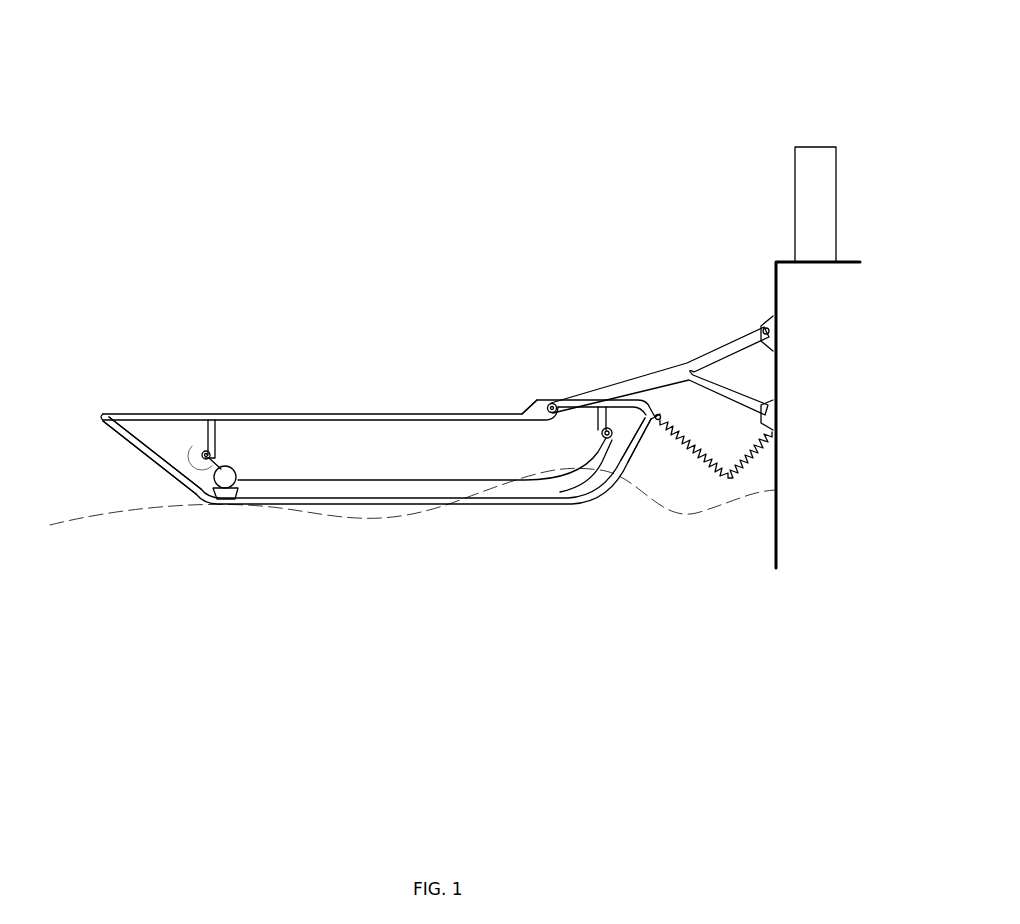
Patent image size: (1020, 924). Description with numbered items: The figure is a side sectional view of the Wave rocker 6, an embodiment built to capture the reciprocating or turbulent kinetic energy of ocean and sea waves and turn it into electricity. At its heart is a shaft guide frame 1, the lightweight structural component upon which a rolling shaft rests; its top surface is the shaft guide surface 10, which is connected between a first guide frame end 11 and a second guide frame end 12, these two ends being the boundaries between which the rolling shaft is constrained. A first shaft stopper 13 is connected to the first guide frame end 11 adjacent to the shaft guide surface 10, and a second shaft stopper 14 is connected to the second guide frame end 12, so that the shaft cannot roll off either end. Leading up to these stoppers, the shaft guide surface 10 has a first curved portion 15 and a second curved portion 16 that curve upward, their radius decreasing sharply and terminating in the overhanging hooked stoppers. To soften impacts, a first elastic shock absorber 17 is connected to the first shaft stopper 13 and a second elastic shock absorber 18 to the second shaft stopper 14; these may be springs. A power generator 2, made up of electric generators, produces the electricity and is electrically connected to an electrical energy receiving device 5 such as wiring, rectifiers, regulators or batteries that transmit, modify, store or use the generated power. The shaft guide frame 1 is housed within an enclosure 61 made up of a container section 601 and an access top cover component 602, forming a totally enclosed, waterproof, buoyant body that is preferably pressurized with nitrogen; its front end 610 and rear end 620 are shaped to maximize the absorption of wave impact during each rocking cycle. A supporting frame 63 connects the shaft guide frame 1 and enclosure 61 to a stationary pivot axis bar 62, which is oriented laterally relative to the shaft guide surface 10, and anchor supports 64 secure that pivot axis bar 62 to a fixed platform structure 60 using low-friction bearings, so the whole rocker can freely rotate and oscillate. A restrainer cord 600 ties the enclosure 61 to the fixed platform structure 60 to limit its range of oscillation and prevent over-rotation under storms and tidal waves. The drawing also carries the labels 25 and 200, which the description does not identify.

The shaft guide frame 1 is at (302, 490).
The power generator 2 is at (229, 466).
The electrical energy receiving device 5 is at (804, 163).
The Wave rocker 6 is at (433, 280).
The shaft guide surface 10 is at (377, 478).
The first guide frame end 11 is at (191, 436).
The second guide frame end 12 is at (621, 455).
The first shaft stopper 13 is at (211, 445).
The second shaft stopper 14 is at (605, 438).
The first curved portion 15 is at (199, 454).
The second curved portion 16 is at (617, 447).
The first elastic shock absorber 17 is at (206, 461).
The second elastic shock absorber 18 is at (605, 416).
The pedestal 25 is at (226, 500).
The fixed platform structure 60 is at (776, 263).
The enclosure 61 is at (425, 413).
The stationary pivot axis bar 62 is at (554, 404).
The supporting frame 63 is at (538, 413).
The anchor supports 64 is at (672, 362).
The water surface 200 is at (421, 522).
The restrainer cords 600 is at (722, 482).
The container section 601 is at (493, 437).
The access top cover component 602 is at (628, 410).
The front end 610 is at (130, 453).
The rear end 620 is at (642, 458).